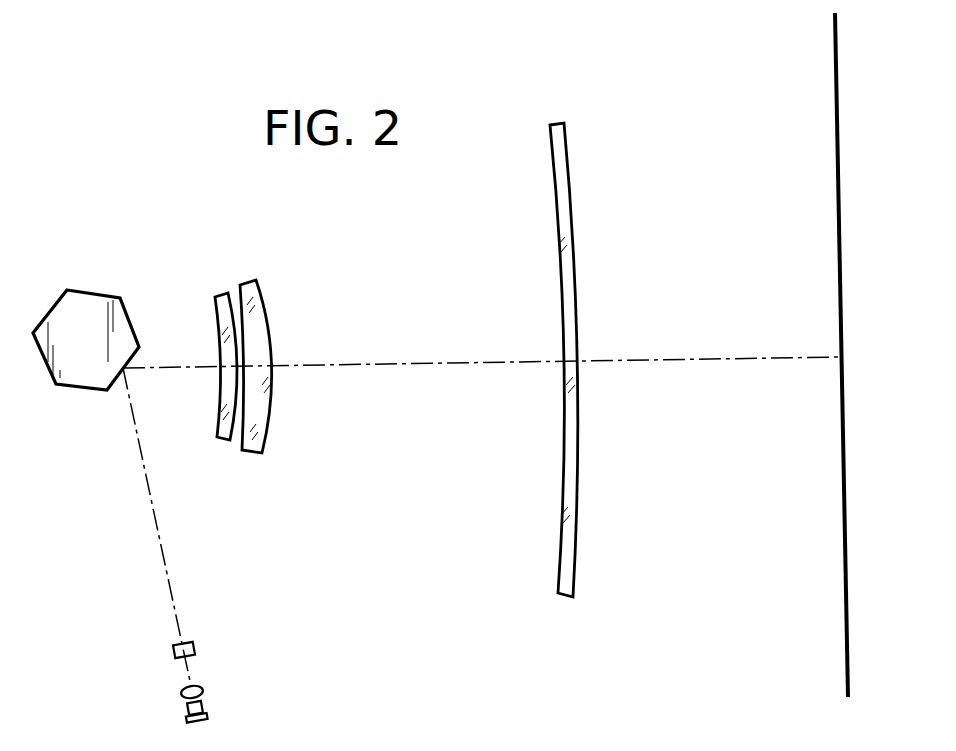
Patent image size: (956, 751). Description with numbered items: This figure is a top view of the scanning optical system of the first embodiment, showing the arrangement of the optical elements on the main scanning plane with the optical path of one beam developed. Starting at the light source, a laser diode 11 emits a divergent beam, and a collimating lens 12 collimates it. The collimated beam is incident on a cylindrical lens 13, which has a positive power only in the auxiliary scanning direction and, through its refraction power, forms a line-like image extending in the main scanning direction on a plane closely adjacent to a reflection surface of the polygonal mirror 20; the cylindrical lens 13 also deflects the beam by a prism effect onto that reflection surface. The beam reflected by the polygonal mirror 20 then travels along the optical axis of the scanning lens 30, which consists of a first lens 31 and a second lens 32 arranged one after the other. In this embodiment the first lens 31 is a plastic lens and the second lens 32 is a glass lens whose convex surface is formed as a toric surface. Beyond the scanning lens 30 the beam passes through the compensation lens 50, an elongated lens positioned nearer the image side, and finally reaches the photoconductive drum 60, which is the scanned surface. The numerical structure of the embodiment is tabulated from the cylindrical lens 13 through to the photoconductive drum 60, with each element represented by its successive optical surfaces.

The laser diode 11 is at (203, 705).
The collimating lens 12 is at (190, 645).
The cylindrical lens 13 is at (184, 689).
The polygonal mirror 20 is at (99, 304).
The scanning lens 30 is at (240, 418).
The first lens 31 is at (225, 437).
The second lens 32 is at (260, 394).
The compensation lens 50 is at (562, 518).
The photoconductive drum 60 is at (843, 550).